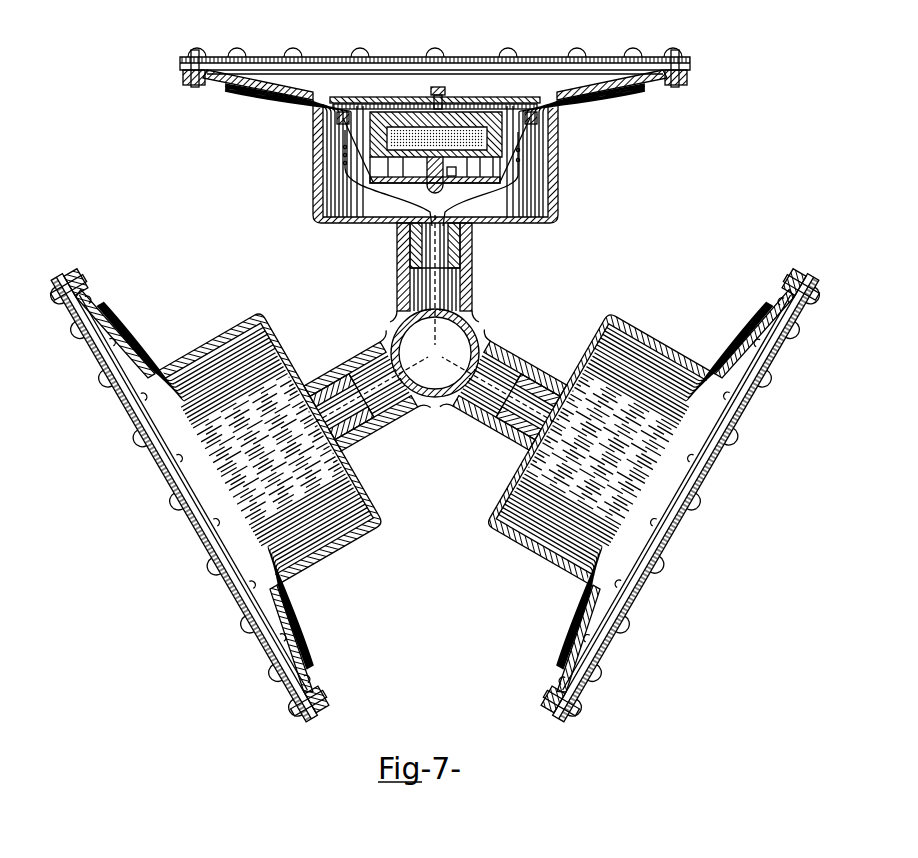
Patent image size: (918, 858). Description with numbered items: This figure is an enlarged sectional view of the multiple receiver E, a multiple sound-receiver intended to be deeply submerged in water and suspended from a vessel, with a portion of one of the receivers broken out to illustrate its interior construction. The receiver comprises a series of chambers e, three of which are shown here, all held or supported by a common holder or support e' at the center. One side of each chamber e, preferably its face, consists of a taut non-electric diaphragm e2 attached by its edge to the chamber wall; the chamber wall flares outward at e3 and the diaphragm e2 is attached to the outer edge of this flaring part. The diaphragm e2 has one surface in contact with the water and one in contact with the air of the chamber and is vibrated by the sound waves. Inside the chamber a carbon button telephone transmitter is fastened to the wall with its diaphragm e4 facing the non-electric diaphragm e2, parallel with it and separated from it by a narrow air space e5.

The multiple receiver E is at (434, 374).
The chamber e is at (449, 156).
The common holder or support e' is at (459, 352).
The taut non-electric diaphragm e2 is at (525, 70).
The flaring part of the chamber wall e3 is at (283, 87).
The transmitter diaphragm e4 is at (376, 97).
The narrow air space e5 is at (473, 84).